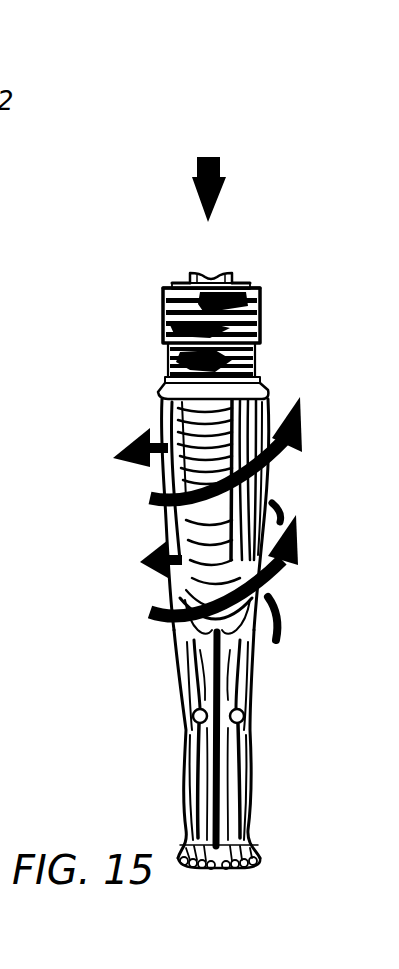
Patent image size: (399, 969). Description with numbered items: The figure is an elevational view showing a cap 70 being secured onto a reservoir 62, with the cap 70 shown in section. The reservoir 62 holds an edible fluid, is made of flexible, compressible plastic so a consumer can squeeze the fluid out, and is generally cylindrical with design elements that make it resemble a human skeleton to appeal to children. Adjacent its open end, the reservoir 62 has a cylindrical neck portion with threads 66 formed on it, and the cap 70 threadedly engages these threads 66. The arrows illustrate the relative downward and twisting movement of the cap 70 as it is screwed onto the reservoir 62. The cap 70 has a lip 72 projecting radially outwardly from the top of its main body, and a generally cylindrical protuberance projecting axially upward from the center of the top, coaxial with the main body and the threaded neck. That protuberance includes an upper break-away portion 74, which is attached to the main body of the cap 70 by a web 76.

The reservoir 62 is at (253, 665).
The threads 66 is at (165, 366).
The cap 70 is at (262, 308).
The lip 72 is at (262, 289).
The break-away portion 74 is at (212, 275).
The web 76 is at (190, 284).